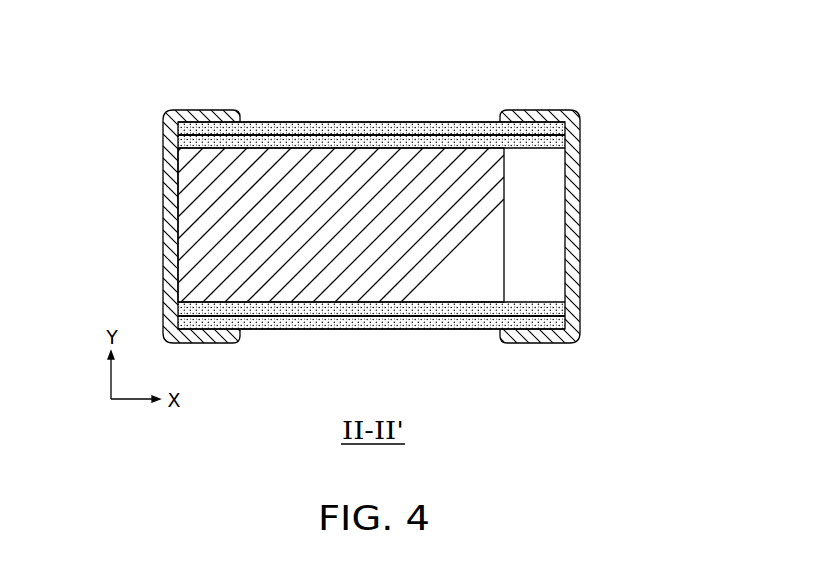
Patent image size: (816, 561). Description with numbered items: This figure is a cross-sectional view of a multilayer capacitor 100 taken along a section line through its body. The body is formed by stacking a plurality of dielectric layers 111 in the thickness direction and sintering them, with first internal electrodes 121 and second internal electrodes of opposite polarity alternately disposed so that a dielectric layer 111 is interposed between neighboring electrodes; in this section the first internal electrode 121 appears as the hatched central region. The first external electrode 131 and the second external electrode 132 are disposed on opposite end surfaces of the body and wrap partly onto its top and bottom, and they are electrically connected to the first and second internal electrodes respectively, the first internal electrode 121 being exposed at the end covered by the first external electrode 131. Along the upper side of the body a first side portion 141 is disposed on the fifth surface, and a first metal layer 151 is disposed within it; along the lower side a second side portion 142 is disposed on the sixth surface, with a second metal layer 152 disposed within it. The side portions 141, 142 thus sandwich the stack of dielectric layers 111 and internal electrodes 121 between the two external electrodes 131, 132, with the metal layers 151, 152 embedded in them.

The multilayer capacitor 100 is at (373, 216).
The dielectric layer 111 is at (552, 228).
The first internal electrode 121 is at (190, 228).
The first external electrode 131 is at (207, 108).
The second external electrode 132 is at (535, 108).
The first side portion 141 is at (306, 119).
The second side portion 142 is at (304, 333).
The first metal layer 151 is at (412, 124).
The second metal layer 152 is at (411, 333).